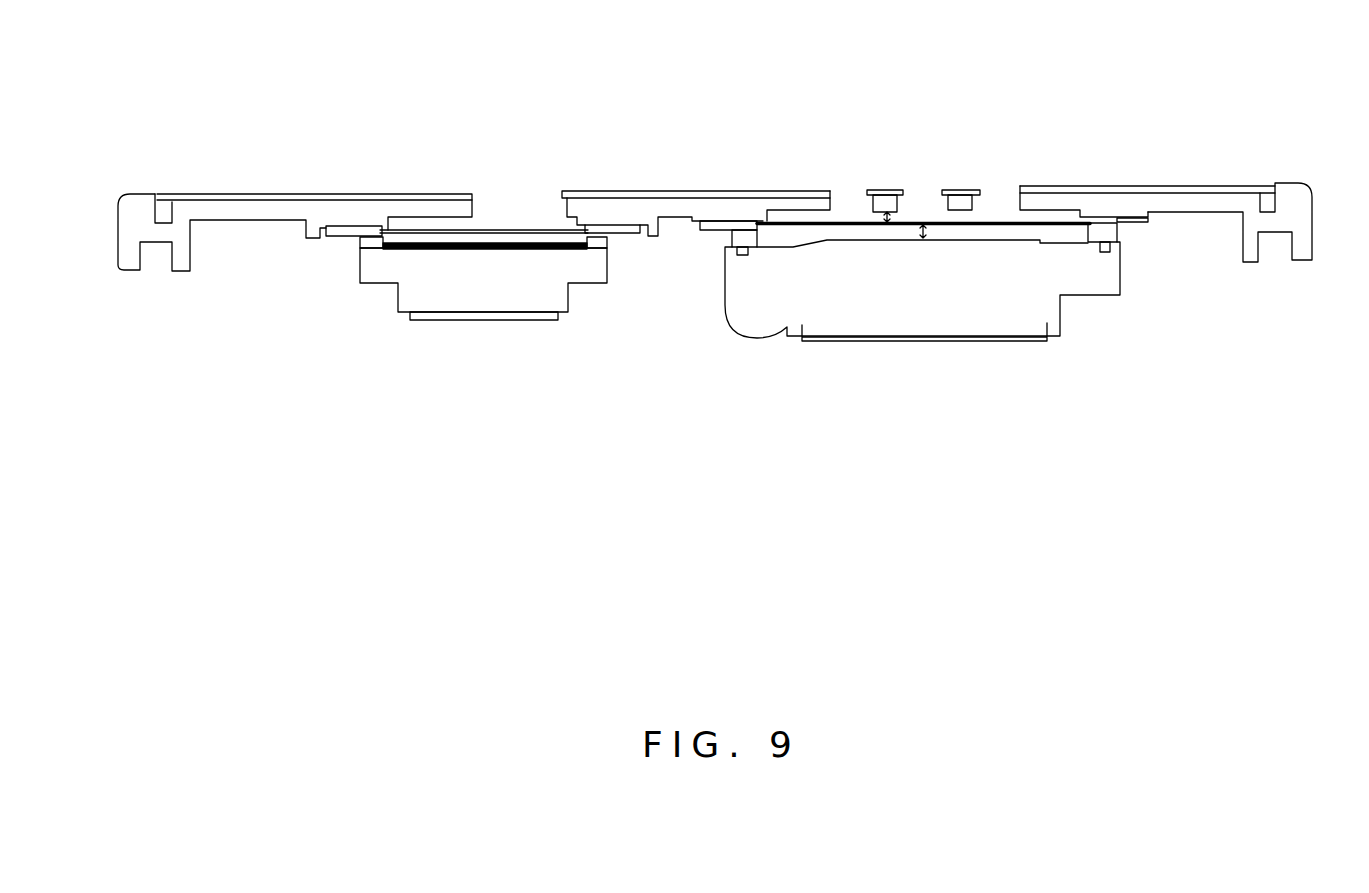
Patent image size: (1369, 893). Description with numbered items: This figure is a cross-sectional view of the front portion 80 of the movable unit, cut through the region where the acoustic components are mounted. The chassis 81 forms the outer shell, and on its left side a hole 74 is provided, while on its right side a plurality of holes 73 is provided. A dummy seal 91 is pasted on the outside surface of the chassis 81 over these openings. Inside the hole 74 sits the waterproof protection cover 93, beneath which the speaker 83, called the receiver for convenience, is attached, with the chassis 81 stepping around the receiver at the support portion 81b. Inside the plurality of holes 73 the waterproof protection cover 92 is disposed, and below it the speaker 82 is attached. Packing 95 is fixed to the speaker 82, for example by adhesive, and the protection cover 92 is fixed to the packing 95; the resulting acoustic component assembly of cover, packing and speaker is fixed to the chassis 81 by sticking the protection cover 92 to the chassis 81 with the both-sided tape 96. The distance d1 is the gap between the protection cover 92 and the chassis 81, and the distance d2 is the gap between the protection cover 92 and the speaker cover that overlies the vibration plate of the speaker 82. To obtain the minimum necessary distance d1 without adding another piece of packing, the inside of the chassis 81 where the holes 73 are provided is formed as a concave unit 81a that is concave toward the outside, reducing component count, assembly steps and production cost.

The front portion 80 is at (1273, 177).
The chassis 81 is at (144, 201).
The concave unit 81a is at (1050, 216).
The frame support portion 81b is at (425, 229).
The speaker 82 is at (1053, 308).
The speaker (receiver) 83 is at (472, 295).
The first plate 91 is at (296, 194).
The waterproof protection cover 92 is at (993, 222).
The waterproof protection cover 93 is at (527, 229).
The packing 95 is at (1117, 229).
The both-sided tape 96 is at (1148, 221).
The holes 73 is at (843, 195).
The hole 74 is at (505, 200).
The distance d1 is at (889, 221).
The distance d2 is at (922, 231).